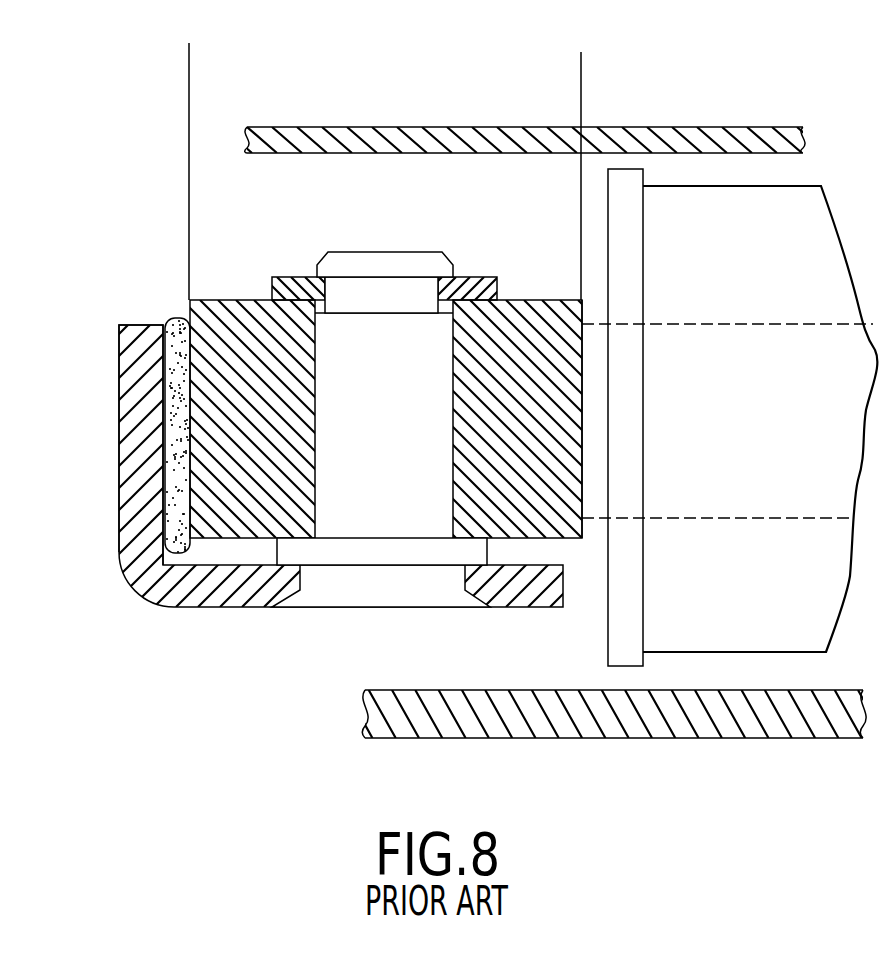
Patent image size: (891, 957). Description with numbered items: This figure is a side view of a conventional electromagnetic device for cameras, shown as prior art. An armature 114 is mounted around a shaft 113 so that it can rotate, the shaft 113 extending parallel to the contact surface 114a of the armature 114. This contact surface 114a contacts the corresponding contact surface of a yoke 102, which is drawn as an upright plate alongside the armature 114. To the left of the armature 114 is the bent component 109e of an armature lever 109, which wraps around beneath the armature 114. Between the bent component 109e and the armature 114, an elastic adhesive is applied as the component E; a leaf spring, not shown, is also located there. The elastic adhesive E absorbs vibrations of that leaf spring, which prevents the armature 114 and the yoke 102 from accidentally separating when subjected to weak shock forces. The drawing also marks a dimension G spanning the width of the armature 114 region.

The yoke 102 is at (595, 517).
The armature lever 109 is at (225, 607).
The bent component 109e is at (137, 356).
The shaft 113 is at (388, 265).
The armature 114 is at (232, 300).
The contact surface 114a is at (585, 305).
The elastic adhesive E is at (172, 318).
The gap dimension G is at (191, 65).